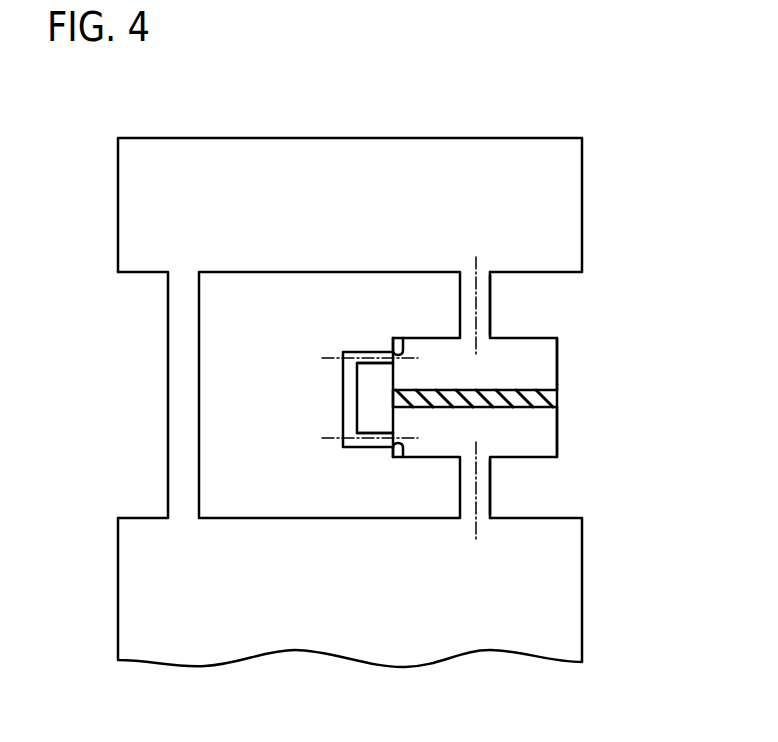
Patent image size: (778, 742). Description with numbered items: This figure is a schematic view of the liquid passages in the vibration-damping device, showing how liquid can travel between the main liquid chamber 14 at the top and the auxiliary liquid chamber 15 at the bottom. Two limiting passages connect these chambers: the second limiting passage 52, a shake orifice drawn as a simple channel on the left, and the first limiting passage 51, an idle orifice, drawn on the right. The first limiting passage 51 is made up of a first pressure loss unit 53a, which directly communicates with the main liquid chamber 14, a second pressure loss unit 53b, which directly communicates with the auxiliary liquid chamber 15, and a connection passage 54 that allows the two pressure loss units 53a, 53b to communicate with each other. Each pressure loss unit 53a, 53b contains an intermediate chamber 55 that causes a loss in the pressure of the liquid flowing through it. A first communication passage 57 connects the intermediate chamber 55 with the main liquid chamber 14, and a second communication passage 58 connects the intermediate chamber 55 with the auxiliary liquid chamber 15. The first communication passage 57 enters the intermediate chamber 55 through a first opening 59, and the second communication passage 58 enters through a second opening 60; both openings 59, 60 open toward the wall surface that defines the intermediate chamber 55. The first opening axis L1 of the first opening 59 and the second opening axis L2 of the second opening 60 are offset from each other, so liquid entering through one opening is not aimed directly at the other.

The main liquid chamber 14 is at (124, 192).
The auxiliary liquid chamber 15 is at (126, 589).
The first limiting passage 51 is at (497, 505).
The second limiting passage 52 is at (165, 397).
The first pressure loss unit 53a is at (657, 275).
The second pressure loss unit 53b is at (657, 403).
The connection passage 54 is at (340, 400).
The intermediate chamber 55 is at (566, 369).
The first communication passage 57 is at (495, 307).
The second communication passage 58 is at (381, 370).
The first opening 59 is at (494, 336).
The second opening 60 is at (402, 343).
The first opening axis L1 is at (477, 271).
The second opening axis L2 is at (330, 356).